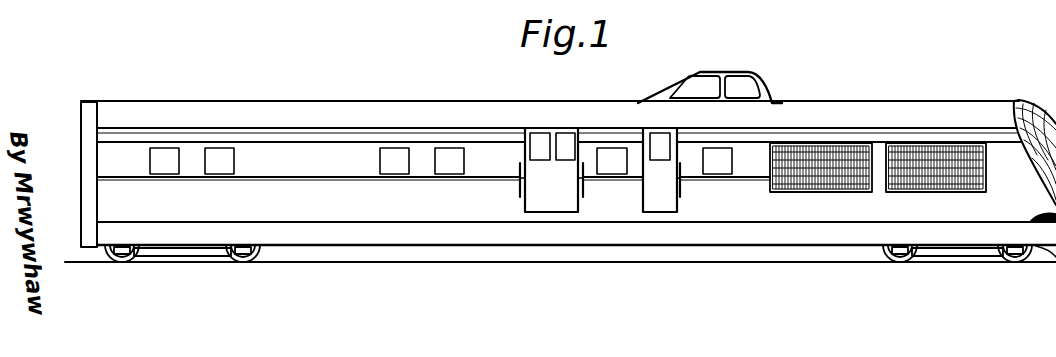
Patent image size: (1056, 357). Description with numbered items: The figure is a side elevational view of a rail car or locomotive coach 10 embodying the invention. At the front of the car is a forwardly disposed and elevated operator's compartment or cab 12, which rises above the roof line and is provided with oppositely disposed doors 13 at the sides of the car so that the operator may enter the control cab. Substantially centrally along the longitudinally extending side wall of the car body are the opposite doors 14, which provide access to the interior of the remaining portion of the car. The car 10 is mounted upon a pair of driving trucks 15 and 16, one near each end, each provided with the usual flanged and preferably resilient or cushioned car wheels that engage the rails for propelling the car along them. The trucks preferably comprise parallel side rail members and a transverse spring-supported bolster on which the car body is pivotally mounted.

The rail car or locomotive coach 10 is at (428, 100).
The operator's compartment or cab 12 is at (747, 87).
The cab doors 13 is at (664, 207).
The car doors 14 is at (563, 203).
The driving truck 15 is at (183, 250).
The driving truck 16 is at (952, 250).